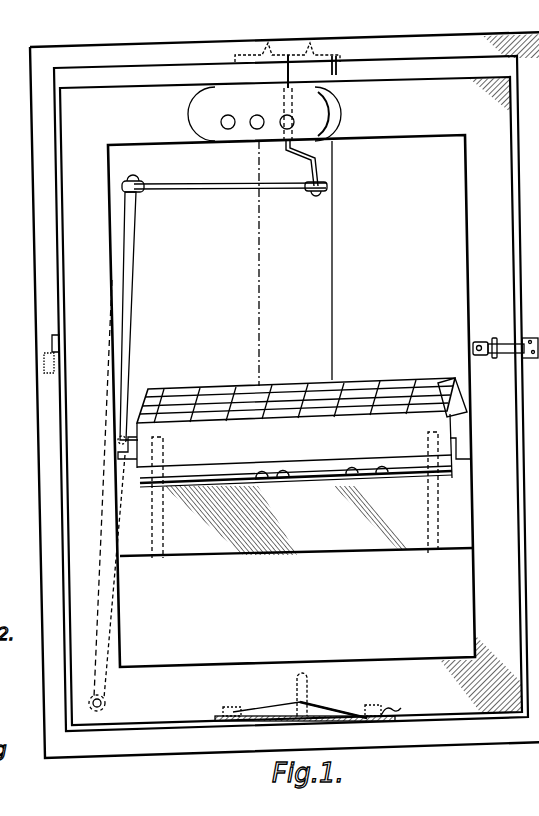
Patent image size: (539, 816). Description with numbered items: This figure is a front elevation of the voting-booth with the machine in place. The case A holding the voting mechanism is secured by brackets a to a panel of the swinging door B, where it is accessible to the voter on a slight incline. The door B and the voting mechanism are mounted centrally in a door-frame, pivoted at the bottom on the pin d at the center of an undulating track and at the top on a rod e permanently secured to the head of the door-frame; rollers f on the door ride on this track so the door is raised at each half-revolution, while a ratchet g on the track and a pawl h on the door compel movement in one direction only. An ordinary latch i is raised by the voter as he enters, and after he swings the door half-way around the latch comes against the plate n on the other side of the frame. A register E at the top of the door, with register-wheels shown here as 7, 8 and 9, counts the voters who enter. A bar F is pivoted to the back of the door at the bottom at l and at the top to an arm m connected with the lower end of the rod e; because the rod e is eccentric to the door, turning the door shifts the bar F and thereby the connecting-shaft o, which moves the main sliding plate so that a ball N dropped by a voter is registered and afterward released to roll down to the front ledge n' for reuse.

The case A is at (303, 428).
The swinging door B is at (470, 252).
The register E is at (264, 114).
The bar F is at (128, 326).
The ball N is at (286, 482).
The brackets a is at (160, 530).
The pin d is at (298, 684).
The rod e is at (284, 70).
The rollers f is at (320, 68).
The ratchet g is at (305, 730).
The pawl h is at (338, 70).
The latch i is at (497, 342).
The pivot l is at (105, 704).
The arm m is at (215, 192).
The plate n is at (30, 354).
The front ledge n' is at (296, 496).
The connecting-shaft o is at (125, 437).
The gauge 7 is at (287, 122).
The gauge 8 is at (257, 122).
The gauge 9 is at (228, 122).